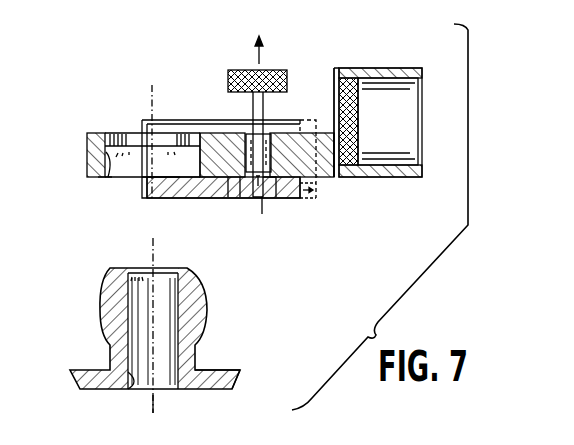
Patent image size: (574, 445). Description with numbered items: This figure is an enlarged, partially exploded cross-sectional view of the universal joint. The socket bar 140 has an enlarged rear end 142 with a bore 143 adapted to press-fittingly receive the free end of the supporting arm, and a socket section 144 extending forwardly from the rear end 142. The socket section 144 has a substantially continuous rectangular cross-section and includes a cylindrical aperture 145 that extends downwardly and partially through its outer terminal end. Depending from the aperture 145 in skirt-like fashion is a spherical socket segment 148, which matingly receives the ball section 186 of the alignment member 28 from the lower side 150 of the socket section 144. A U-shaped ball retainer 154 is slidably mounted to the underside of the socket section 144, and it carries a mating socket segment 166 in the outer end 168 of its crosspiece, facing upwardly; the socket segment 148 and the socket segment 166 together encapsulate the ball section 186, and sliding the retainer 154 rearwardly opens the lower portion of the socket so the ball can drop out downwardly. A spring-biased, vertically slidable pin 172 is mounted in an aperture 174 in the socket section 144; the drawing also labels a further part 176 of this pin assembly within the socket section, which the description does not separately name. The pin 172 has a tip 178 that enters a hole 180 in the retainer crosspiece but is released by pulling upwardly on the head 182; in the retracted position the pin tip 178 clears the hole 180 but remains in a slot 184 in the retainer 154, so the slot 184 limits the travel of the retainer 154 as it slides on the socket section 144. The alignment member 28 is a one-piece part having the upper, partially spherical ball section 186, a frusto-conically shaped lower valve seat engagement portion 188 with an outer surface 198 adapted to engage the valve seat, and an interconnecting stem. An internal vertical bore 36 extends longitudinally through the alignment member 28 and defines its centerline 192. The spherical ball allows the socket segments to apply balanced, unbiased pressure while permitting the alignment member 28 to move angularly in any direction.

The alignment member 28 is at (212, 328).
The internal vertical bore 36 is at (136, 388).
The socket bar 140 is at (337, 66).
The enlarged rear end 142 is at (388, 67).
The bore 143 is at (408, 114).
The socket section 144 is at (89, 135).
The cylindrical aperture 145 is at (117, 131).
The socket segment 148 is at (105, 180).
The lower side 150 is at (100, 179).
The U-shaped ball retainer 154 is at (298, 198).
The mating socket segment 166 is at (196, 180).
The outer end 168 is at (141, 181).
The spring-biased vertically slidable pin 172 is at (236, 68).
The aperture 174 is at (291, 124).
The nut 176 is at (247, 130).
The pin tip 178 is at (250, 199).
The hole 180 is at (273, 200).
The head 182 is at (271, 66).
The slot 184 is at (232, 200).
The ball section 186 is at (206, 296).
The lower valve seat engagement portion 188 is at (258, 354).
The centerline 192 is at (156, 400).
The frusto-conically shaped outer surface 198 is at (235, 383).